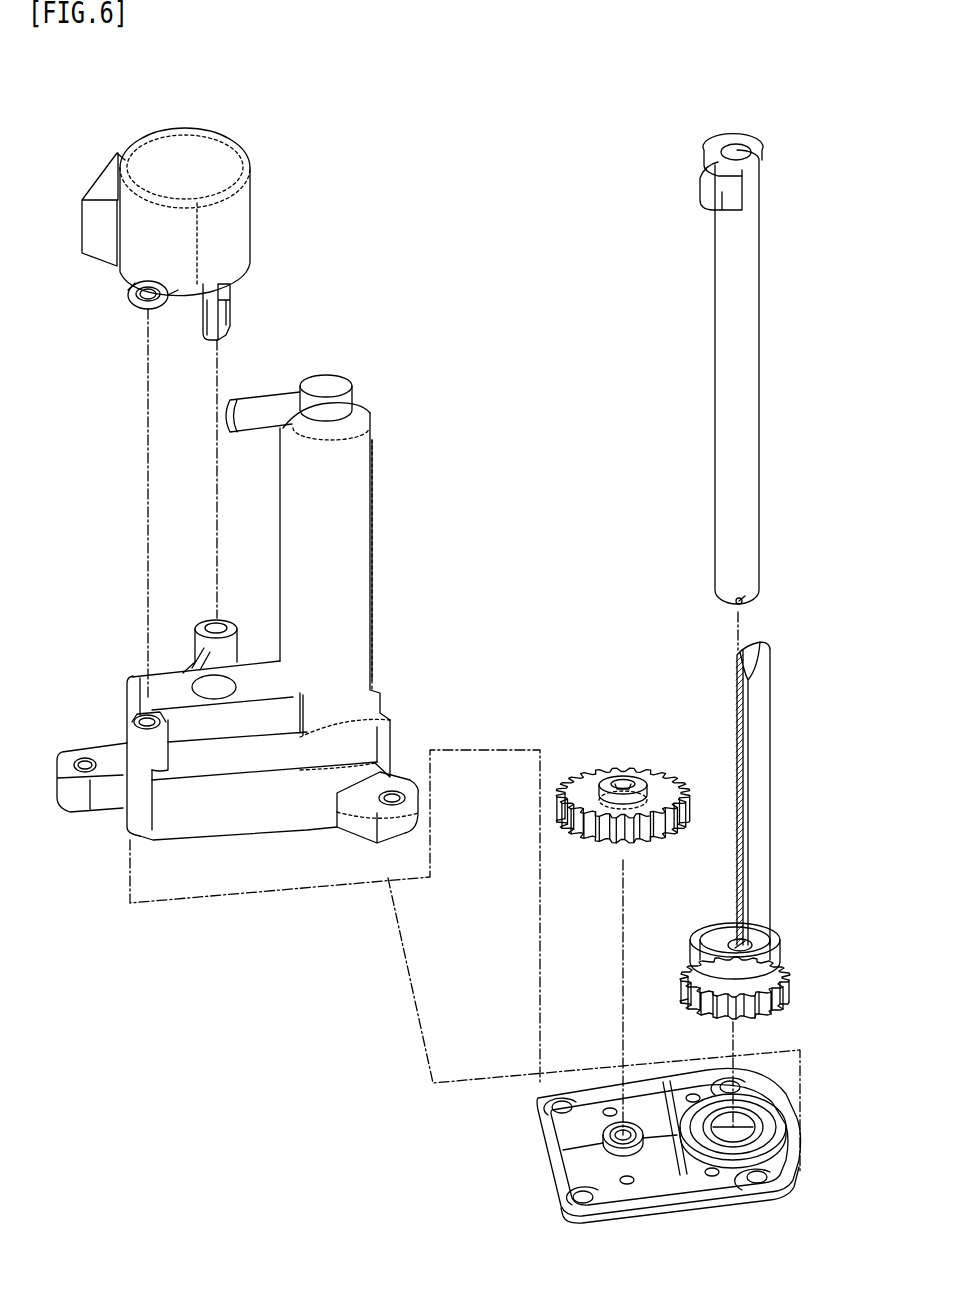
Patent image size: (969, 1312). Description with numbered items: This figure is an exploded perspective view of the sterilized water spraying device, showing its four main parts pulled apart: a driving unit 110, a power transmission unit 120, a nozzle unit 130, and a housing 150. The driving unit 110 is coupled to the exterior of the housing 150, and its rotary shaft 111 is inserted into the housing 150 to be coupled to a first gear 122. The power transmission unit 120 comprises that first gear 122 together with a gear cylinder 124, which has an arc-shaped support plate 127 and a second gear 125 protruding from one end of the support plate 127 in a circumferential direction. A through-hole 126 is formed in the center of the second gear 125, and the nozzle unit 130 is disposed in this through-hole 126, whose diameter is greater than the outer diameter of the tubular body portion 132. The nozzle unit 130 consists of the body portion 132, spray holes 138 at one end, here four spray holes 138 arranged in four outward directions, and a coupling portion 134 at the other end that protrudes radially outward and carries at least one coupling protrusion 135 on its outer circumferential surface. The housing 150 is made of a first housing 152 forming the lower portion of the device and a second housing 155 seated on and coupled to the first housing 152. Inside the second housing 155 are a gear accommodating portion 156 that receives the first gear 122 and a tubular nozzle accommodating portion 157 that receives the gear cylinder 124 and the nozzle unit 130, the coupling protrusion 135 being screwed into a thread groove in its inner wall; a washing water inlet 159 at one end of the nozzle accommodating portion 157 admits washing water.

The driving unit 110 is at (228, 414).
The rotary shaft 111 is at (232, 306).
The power transmission unit 120 is at (702, 876).
The first gear 122 is at (621, 758).
The gear cylinder 124 is at (742, 884).
The second gear 125 is at (777, 948).
The through-hole 126 is at (786, 1004).
The support plate 127 is at (762, 805).
The nozzle unit 130 is at (738, 392).
The body portion 132 is at (722, 292).
The coupling portion 134 is at (716, 205).
The coupling protrusion 135 is at (705, 176).
The spray hole 138 is at (740, 603).
The housing 150 is at (418, 921).
The first housing 152 is at (542, 1158).
The second housing 155 is at (226, 857).
The gear accommodating portion 156 is at (170, 708).
The nozzle accommodating portion 157 is at (228, 547).
The washing water inlet 159 is at (222, 413).